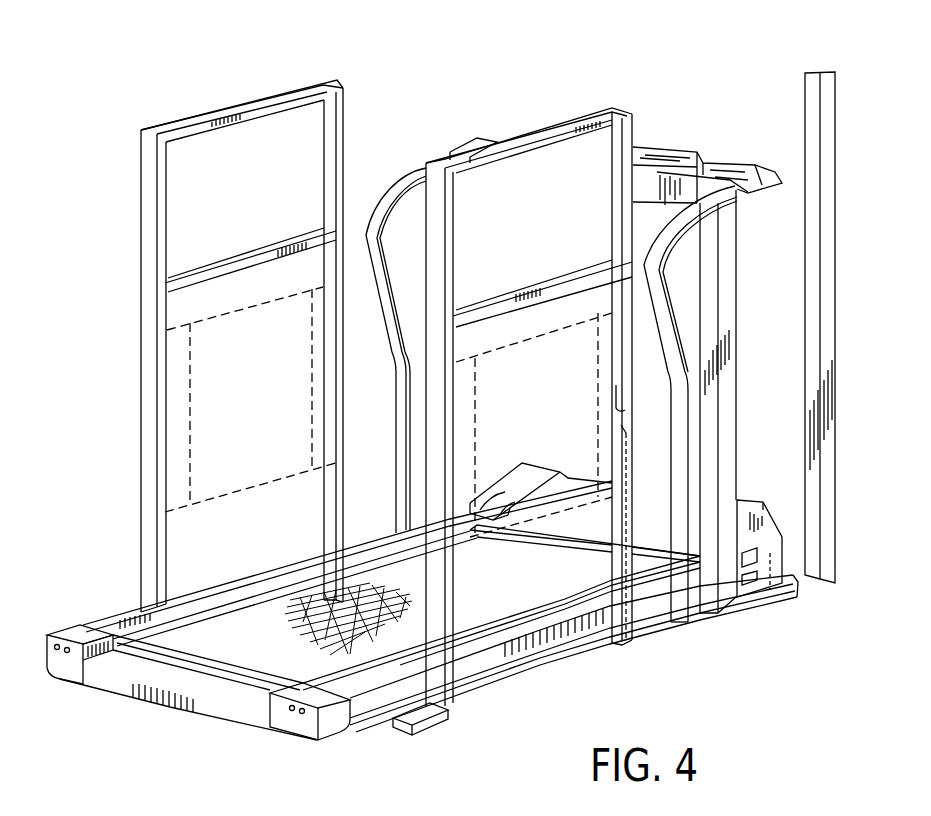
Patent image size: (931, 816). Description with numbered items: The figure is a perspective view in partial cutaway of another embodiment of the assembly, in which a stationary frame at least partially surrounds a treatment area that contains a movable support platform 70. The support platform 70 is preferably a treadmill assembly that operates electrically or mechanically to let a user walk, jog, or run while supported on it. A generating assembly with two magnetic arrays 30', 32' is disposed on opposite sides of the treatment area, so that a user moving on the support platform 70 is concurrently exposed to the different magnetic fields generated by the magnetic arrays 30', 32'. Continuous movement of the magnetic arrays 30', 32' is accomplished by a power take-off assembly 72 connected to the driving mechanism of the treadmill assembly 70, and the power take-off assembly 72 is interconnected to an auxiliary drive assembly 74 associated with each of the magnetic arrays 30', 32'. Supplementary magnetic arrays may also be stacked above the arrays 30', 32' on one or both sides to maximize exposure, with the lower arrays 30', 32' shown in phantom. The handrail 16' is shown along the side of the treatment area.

The handrail 16' is at (430, 272).
The magnetic array 30' is at (534, 425).
The magnetic array 32' is at (250, 399).
The support platform 70 is at (265, 603).
The power take-off assembly 72 is at (787, 532).
The auxiliary drive assembly 74 is at (620, 405).